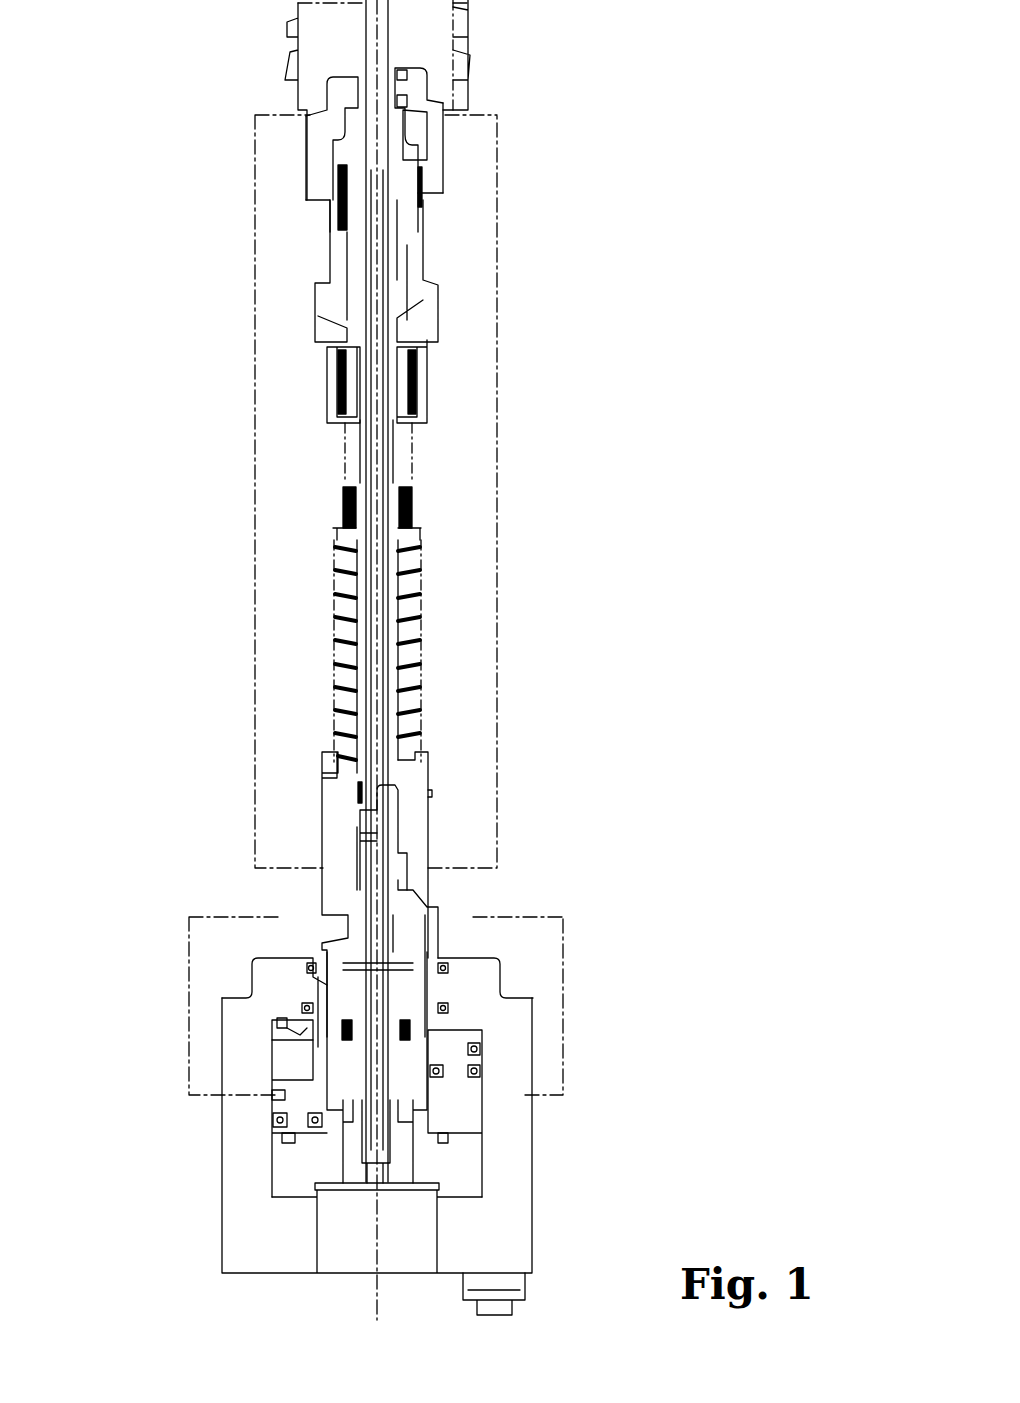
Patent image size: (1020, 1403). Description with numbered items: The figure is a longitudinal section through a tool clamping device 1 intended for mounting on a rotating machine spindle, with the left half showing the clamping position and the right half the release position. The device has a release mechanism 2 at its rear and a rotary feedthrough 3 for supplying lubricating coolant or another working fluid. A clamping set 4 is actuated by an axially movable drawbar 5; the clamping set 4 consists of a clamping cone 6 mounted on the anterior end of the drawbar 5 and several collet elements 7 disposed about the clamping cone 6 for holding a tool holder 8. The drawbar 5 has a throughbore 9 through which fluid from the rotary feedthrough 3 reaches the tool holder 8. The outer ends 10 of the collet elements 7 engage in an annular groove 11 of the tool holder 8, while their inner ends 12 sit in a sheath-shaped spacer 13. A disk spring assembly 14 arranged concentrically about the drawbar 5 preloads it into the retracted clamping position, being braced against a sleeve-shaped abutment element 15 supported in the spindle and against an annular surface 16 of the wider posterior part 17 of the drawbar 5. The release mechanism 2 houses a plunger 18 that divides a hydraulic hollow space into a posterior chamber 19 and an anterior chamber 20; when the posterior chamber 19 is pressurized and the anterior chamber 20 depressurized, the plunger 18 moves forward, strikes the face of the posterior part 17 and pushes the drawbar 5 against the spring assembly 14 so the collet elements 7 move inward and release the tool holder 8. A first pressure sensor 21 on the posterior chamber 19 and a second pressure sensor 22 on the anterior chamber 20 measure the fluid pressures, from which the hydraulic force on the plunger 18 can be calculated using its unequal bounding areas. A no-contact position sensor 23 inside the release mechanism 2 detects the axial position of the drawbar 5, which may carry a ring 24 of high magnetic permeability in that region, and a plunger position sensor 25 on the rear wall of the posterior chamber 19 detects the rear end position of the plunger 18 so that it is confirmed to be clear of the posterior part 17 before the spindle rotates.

The tool clamping device 1 is at (545, 464).
The release mechanism 2 is at (585, 1112).
The rotary feedthrough 3 is at (293, 1237).
The clamping set 4 is at (443, 234).
The drawbar 5 is at (362, 450).
The clamping cone 6 is at (345, 142).
The collet elements 7 is at (335, 235).
The tool holder 8 is at (330, 44).
The throughbore 9 is at (375, 388).
The outer ends 10 is at (417, 159).
The annular groove 11 is at (430, 118).
The inner ends 12 is at (417, 295).
The spacer 13 is at (345, 322).
The spring assembly 14 is at (410, 640).
The abutment element 15 is at (335, 530).
The annular surface 16 is at (337, 770).
The posterior part 17 is at (410, 818).
The plunger 18 is at (275, 1082).
The posterior chamber 19 is at (457, 1110).
The anterior chamber 20 is at (280, 1035).
The first pressure sensor 21 is at (277, 1135).
The second pressure sensor 22 is at (273, 1017).
The position sensor 23 is at (445, 1027).
The ring 24 is at (402, 1013).
The plunger position sensor 25 is at (443, 1138).